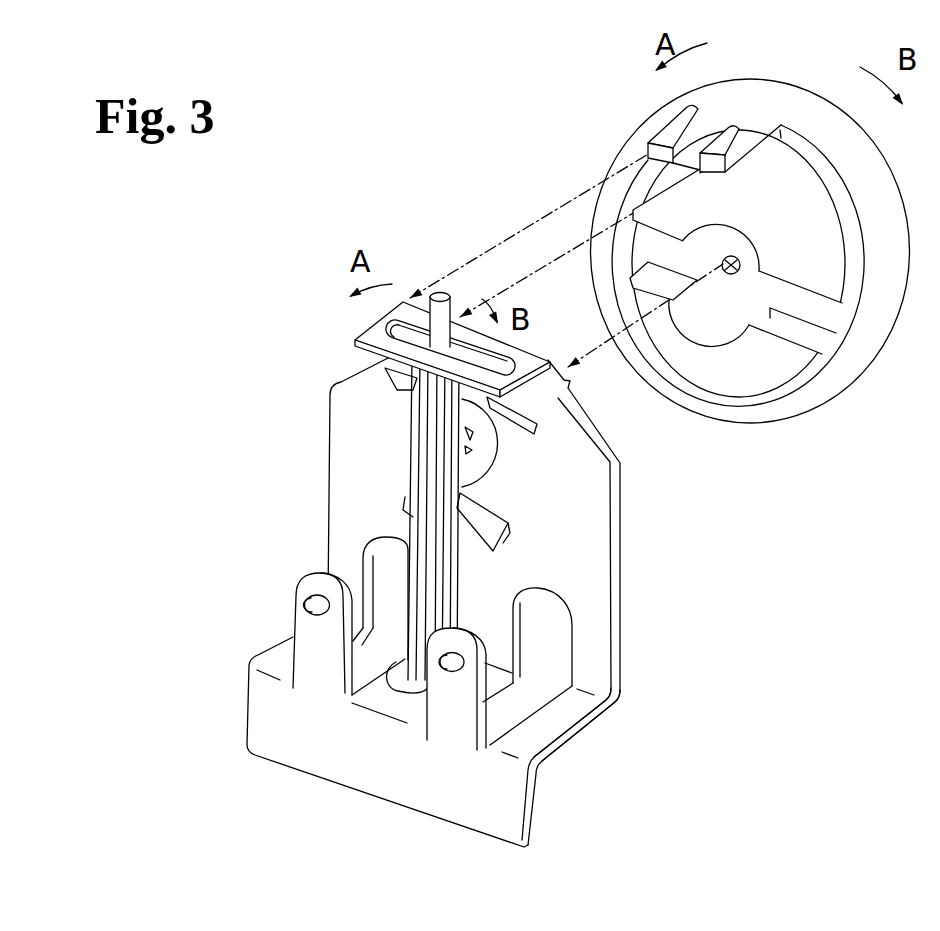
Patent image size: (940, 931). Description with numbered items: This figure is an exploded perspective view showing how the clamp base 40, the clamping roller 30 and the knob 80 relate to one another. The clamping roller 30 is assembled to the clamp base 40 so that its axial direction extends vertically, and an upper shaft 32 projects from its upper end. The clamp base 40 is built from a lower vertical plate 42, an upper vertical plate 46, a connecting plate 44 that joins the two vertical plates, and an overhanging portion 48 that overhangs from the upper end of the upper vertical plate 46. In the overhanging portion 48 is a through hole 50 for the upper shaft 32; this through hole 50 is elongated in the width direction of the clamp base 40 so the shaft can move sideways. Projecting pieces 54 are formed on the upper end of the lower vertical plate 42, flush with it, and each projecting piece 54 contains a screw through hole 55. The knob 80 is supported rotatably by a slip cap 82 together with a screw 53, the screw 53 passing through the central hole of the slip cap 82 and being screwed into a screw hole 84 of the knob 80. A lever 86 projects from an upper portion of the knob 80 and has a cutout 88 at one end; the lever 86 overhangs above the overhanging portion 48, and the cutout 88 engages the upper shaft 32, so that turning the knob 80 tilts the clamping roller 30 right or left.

The clamping roller 30 is at (404, 465).
The upper shaft 32 is at (440, 292).
The clamp base 40 is at (505, 601).
The lower vertical plate 42 is at (512, 802).
The connecting plate 44 is at (548, 740).
The upper vertical plate 46 is at (597, 555).
The overhanging portion 48 is at (406, 347).
The through hole 50 is at (395, 333).
The screw 53 is at (467, 483).
The projecting pieces 54 is at (308, 618).
The screw through hole 55 is at (307, 603).
The knob 80 is at (725, 229).
The slip cap 82 is at (487, 448).
The screw hole 84 is at (748, 247).
The lever 86 is at (666, 137).
The cutout 88 is at (703, 133).